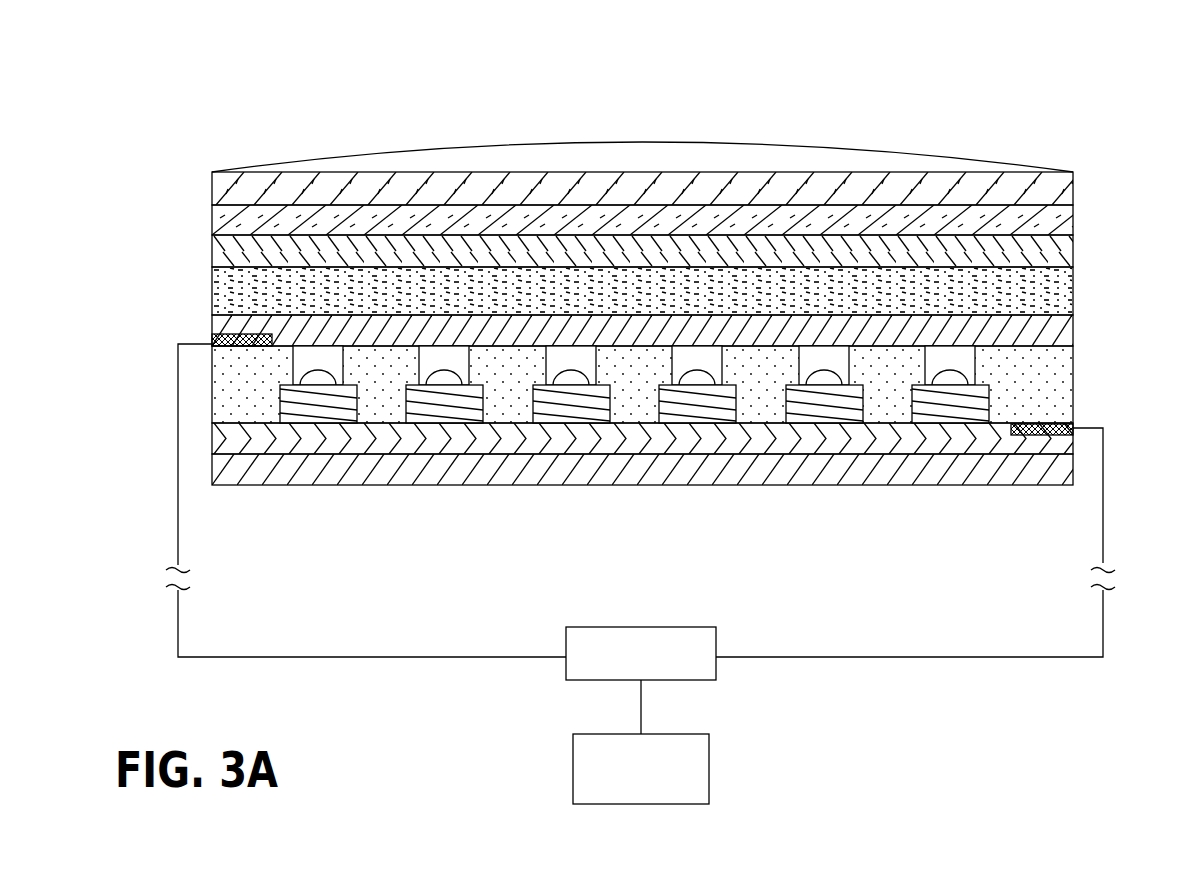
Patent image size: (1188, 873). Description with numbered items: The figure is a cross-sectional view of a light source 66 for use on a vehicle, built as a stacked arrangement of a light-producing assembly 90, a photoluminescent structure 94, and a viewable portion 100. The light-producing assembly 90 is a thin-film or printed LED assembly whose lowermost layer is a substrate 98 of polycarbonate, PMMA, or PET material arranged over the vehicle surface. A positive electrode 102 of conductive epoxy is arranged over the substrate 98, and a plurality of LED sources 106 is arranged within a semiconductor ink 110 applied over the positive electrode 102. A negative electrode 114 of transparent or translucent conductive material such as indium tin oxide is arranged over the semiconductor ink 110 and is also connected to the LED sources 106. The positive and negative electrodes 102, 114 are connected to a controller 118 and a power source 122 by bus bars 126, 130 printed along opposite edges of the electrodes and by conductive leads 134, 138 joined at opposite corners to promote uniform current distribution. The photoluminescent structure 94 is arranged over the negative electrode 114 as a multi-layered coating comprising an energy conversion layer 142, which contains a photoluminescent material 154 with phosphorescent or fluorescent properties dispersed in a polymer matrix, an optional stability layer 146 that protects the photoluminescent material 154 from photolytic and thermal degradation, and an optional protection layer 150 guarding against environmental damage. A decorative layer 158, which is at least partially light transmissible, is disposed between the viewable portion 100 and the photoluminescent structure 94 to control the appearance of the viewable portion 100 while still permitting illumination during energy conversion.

The light source 66 is at (911, 72).
The viewable portion 100 is at (958, 155).
The decorative layer 158 is at (1076, 190).
The protection layer 150 is at (1076, 211).
The stability layer 146 is at (1076, 251).
The energy conversion layer 142 is at (1076, 284).
The photoluminescent material 154 is at (1045, 296).
The negative electrode 114 is at (1076, 331).
The semiconductor ink 110 is at (1076, 381).
The LED sources 106 is at (332, 408).
The bus bar 130 is at (212, 339).
The bus bar 126 is at (1076, 426).
The positive electrode 102 is at (1076, 445).
The substrate 98 is at (1076, 475).
The photoluminescent structure 94 is at (178, 208).
The light-producing assembly 90 is at (122, 487).
The conductive lead 138 is at (178, 536).
The conductive lead 134 is at (1105, 532).
The controller 118 is at (718, 672).
The power source 122 is at (709, 752).